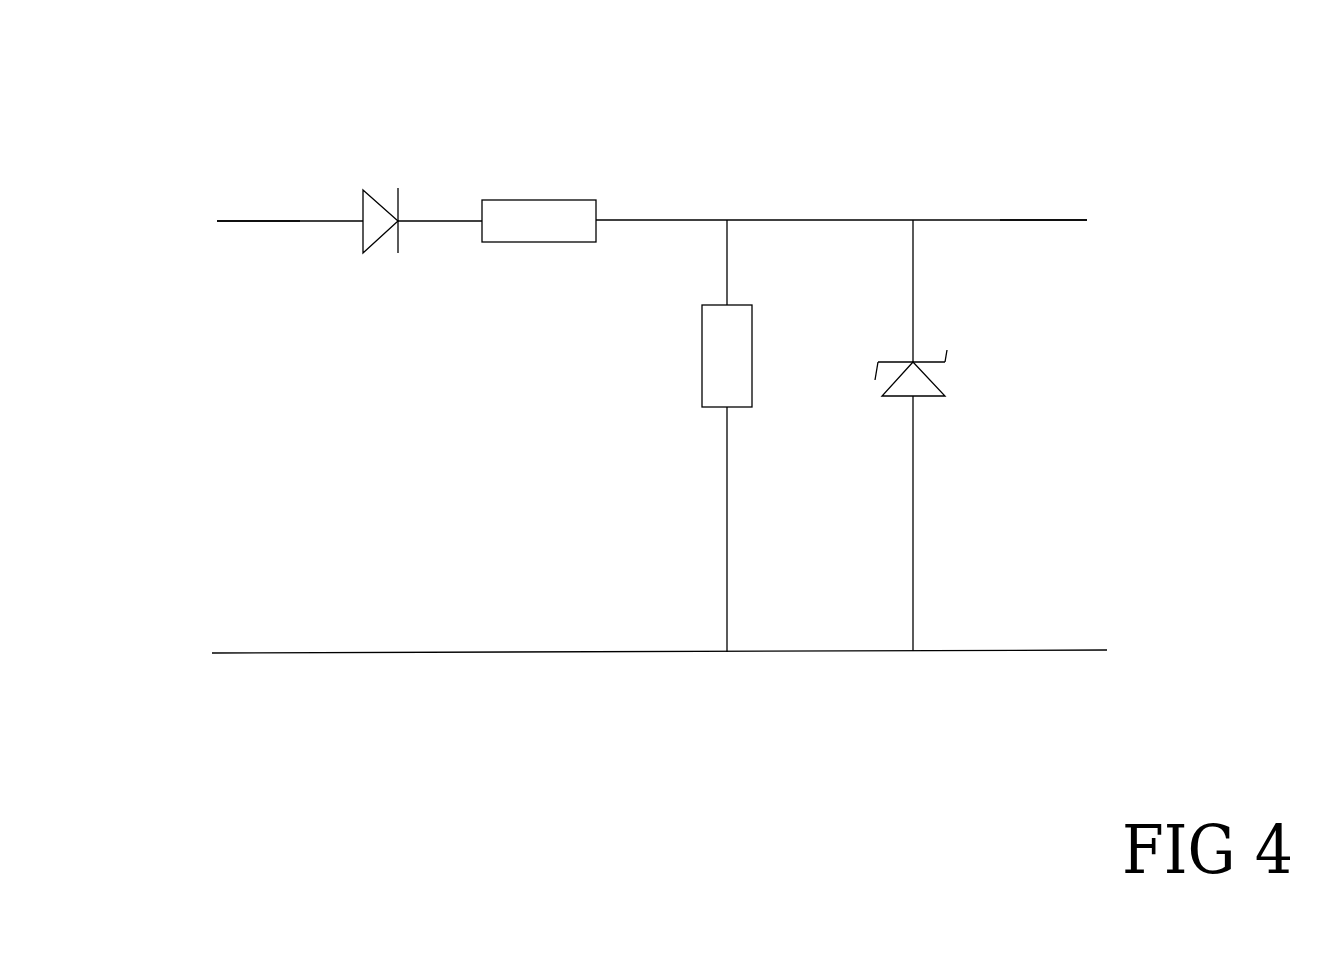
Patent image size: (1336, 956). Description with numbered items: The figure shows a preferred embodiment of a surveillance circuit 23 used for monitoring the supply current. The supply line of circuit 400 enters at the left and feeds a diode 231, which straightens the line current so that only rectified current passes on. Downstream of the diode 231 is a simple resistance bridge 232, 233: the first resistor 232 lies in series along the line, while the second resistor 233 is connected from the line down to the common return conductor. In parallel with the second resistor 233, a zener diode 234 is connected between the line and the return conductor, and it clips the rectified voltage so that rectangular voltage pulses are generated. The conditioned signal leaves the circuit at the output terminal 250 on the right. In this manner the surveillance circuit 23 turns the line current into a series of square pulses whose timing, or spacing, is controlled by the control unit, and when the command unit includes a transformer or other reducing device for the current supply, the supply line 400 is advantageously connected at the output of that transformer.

The surveillance circuit 23 is at (212, 137).
The supply line of circuit 400 is at (227, 222).
The diode 231 is at (374, 195).
The resistance bridge resistor 232 is at (552, 200).
The resistance bridge resistor 233 is at (743, 307).
The zener diode 234 is at (935, 360).
The output terminal 250 is at (1000, 220).